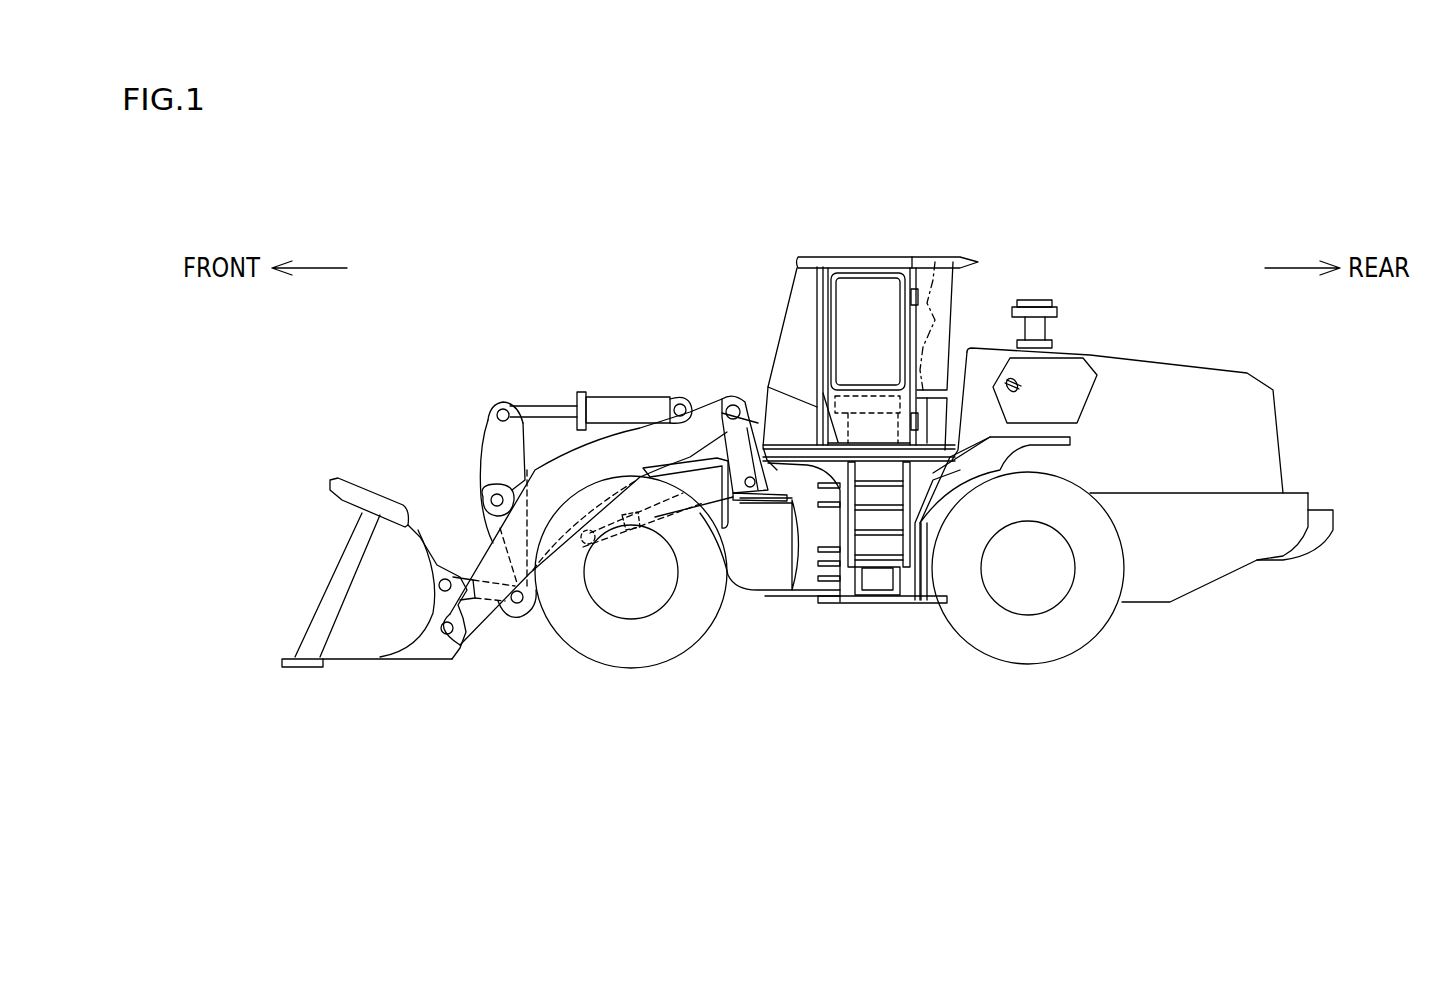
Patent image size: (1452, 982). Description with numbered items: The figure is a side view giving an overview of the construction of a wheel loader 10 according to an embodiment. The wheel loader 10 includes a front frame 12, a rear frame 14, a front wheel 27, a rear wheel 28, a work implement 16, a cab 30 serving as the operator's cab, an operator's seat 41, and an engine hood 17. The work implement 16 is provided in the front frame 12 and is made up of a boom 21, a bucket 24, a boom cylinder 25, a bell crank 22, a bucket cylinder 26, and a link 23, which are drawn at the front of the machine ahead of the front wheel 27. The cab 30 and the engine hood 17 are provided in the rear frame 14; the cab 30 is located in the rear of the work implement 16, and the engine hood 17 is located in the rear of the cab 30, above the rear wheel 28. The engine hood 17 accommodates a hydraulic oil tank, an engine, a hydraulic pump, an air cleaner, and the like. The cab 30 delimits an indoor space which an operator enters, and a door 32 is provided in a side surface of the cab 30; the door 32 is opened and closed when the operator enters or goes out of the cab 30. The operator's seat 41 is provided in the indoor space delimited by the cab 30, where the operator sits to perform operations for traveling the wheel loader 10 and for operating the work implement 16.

The wheel loader 10 is at (510, 225).
The front frame 12 is at (742, 570).
The rear frame 14 is at (928, 575).
The work implement 16 is at (482, 380).
The engine hood 17 is at (1220, 368).
The boom 21 is at (645, 452).
The bell crank 22 is at (500, 462).
The link 23 is at (468, 577).
The bucket 24 is at (370, 593).
The boom cylinder 25 is at (703, 497).
The bucket cylinder 26 is at (604, 397).
The front wheel 27 is at (630, 635).
The rear wheel 28 is at (1030, 632).
The cab 30 is at (796, 243).
The door 32 is at (866, 262).
The operator's seat 41 is at (932, 262).